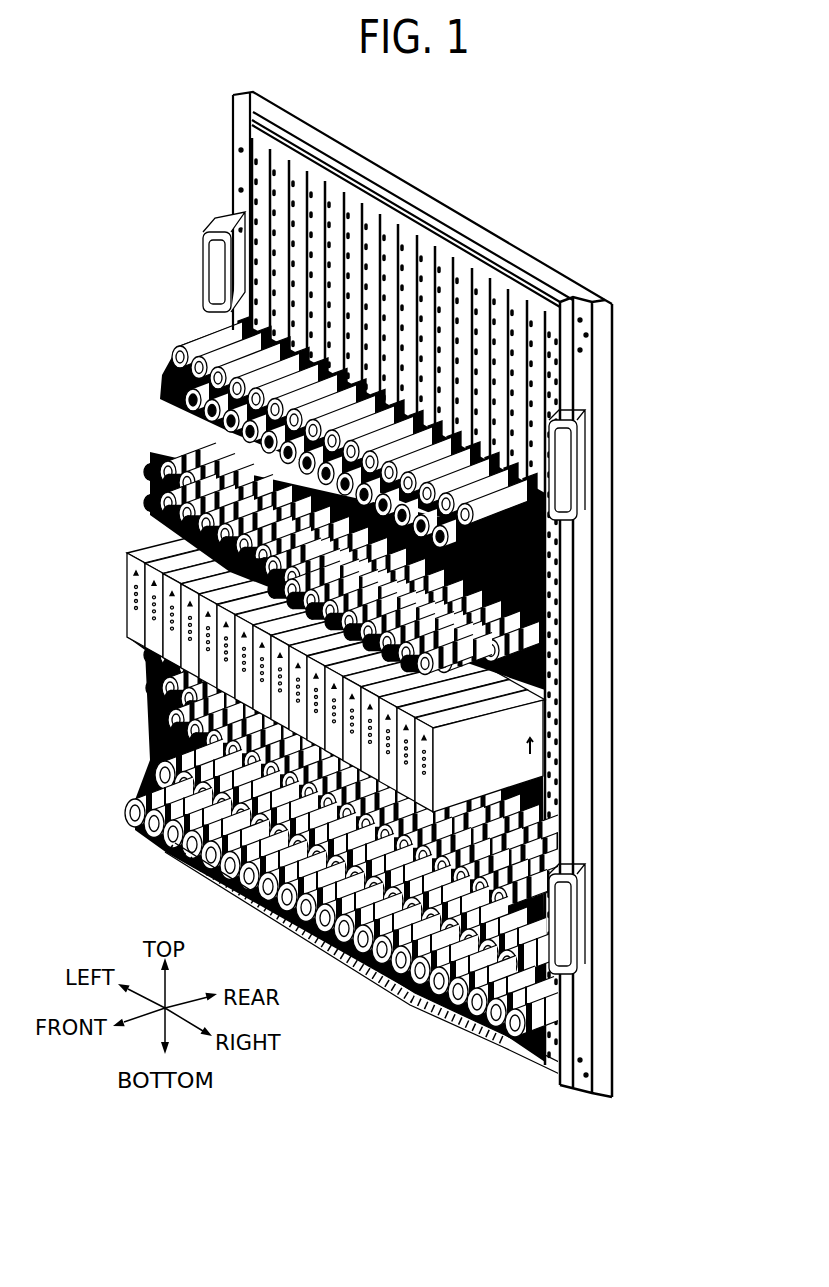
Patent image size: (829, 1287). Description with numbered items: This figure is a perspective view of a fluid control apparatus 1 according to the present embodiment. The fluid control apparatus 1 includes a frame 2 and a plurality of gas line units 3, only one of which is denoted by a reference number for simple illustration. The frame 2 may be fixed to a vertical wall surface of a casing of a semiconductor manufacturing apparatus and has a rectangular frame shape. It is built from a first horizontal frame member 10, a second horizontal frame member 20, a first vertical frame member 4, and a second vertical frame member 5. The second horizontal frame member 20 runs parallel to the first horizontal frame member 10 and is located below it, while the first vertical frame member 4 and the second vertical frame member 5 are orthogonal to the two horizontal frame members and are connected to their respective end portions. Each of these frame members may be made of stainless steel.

The fluid control apparatus 1 is at (368, 609).
The frame 2 is at (607, 294).
The gas line unit 3 is at (112, 598).
The first vertical frame member 4 is at (243, 192).
The second vertical frame member 5 is at (604, 605).
The first horizontal frame member 10 is at (430, 205).
The second horizontal frame member 20 is at (522, 1050).